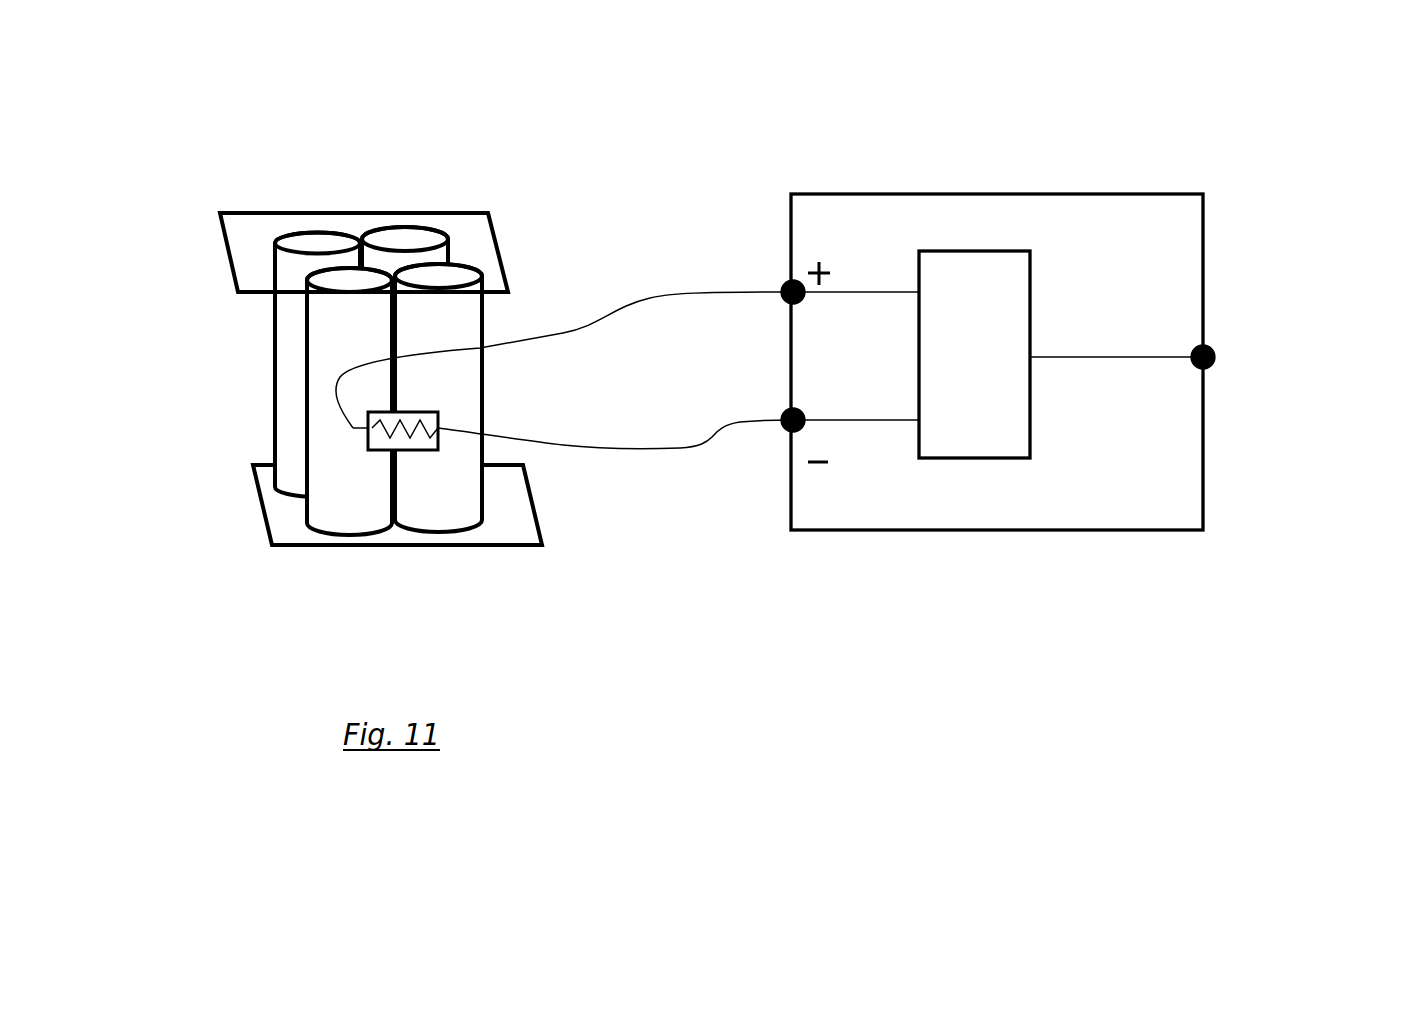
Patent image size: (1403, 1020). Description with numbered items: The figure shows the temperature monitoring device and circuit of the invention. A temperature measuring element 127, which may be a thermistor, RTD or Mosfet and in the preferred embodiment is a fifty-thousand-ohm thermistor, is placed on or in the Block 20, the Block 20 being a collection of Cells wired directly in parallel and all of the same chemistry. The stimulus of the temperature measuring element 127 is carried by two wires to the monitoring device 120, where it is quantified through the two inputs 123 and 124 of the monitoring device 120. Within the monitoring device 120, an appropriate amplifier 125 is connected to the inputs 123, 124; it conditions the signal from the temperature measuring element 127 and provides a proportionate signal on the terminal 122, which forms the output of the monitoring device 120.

The Block 20 is at (280, 203).
The monitoring device 120 is at (932, 64).
The terminal 122 is at (1228, 338).
The input 123 is at (767, 277).
The input 124 is at (772, 445).
The amplifier 125 is at (1013, 465).
The temperature measuring element 127 is at (368, 463).